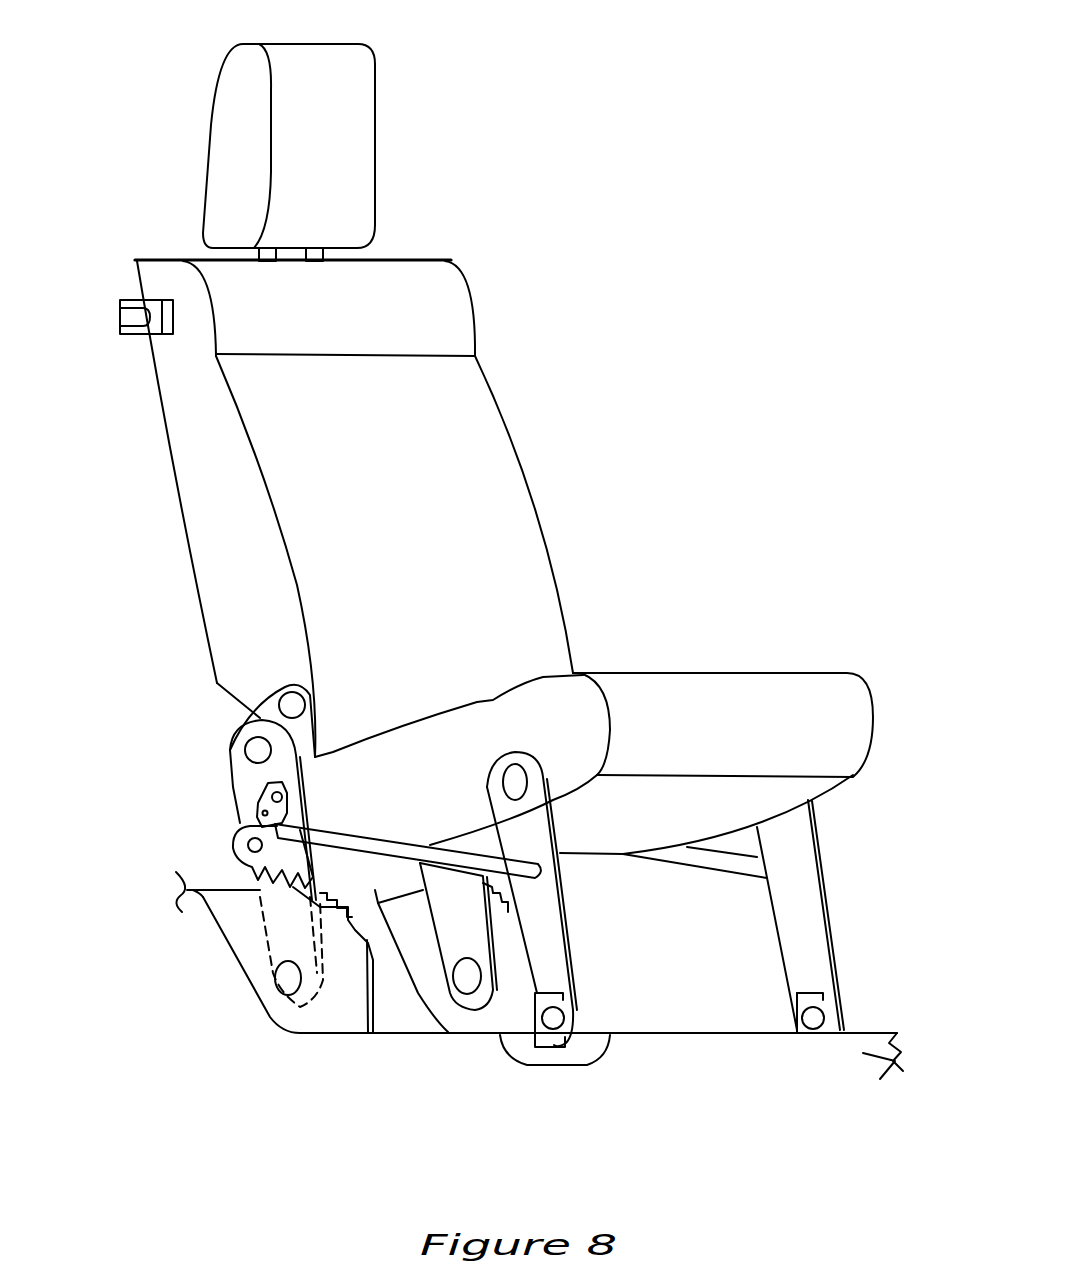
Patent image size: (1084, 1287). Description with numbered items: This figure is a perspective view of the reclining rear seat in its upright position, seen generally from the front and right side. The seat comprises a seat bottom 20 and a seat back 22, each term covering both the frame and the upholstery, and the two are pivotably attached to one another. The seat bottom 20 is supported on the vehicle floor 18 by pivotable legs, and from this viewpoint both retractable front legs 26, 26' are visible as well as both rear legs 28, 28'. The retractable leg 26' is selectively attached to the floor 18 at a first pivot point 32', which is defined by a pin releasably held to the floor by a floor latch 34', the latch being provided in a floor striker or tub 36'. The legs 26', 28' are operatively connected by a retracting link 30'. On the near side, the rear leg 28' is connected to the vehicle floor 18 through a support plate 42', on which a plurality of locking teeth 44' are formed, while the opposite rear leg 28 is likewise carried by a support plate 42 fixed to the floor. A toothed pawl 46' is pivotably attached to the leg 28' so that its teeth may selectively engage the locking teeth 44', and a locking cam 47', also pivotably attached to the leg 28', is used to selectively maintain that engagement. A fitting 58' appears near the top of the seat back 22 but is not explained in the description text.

The vehicle floor 18 is at (897, 1065).
The seat bottom 20 is at (797, 700).
The seat back 22 is at (447, 307).
The front or retractable leg 26 is at (837, 916).
The retractable leg 26' is at (598, 899).
The rear or non-retractable leg 28 is at (413, 1001).
The rear leg 28' is at (189, 804).
The retracting link 30' is at (335, 924).
The first pivot point 32' is at (637, 1053).
The floor latch 34' is at (575, 1079).
The floor striker (tub) 36' is at (590, 1082).
The support plate 42 is at (415, 1015).
The support plate 42' is at (256, 993).
The locking teeth 44' is at (224, 890).
The toothed pawl 46' is at (201, 823).
The locking cam 47' is at (199, 695).
The latch bracket 58' is at (118, 253).